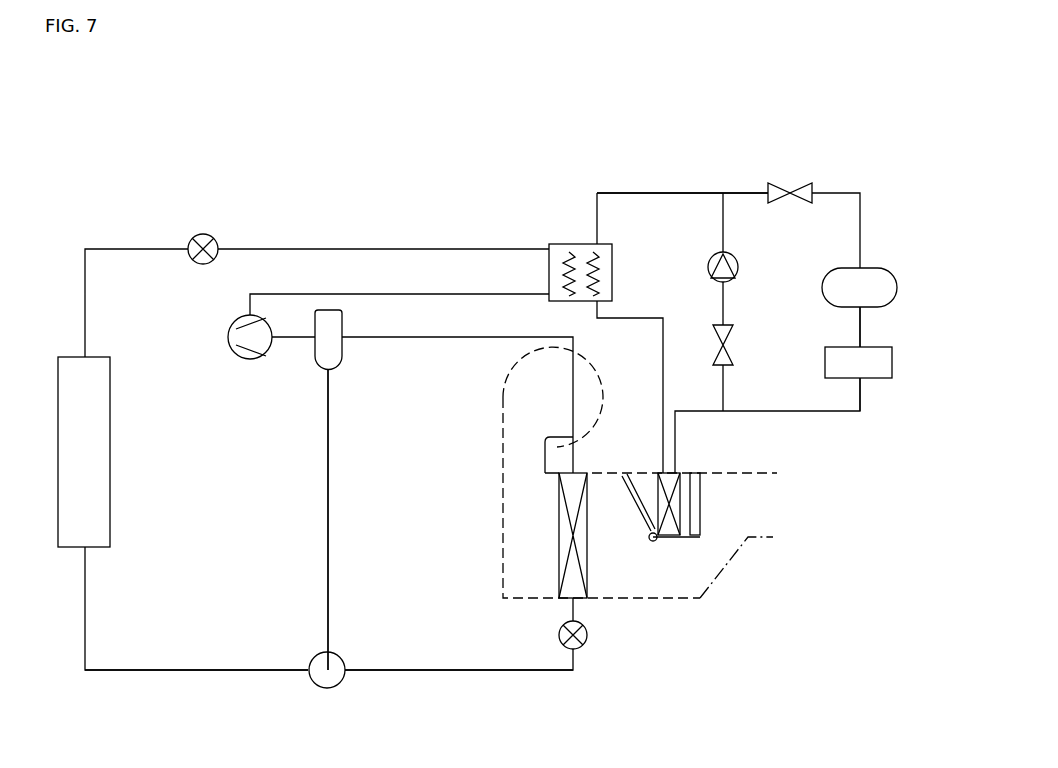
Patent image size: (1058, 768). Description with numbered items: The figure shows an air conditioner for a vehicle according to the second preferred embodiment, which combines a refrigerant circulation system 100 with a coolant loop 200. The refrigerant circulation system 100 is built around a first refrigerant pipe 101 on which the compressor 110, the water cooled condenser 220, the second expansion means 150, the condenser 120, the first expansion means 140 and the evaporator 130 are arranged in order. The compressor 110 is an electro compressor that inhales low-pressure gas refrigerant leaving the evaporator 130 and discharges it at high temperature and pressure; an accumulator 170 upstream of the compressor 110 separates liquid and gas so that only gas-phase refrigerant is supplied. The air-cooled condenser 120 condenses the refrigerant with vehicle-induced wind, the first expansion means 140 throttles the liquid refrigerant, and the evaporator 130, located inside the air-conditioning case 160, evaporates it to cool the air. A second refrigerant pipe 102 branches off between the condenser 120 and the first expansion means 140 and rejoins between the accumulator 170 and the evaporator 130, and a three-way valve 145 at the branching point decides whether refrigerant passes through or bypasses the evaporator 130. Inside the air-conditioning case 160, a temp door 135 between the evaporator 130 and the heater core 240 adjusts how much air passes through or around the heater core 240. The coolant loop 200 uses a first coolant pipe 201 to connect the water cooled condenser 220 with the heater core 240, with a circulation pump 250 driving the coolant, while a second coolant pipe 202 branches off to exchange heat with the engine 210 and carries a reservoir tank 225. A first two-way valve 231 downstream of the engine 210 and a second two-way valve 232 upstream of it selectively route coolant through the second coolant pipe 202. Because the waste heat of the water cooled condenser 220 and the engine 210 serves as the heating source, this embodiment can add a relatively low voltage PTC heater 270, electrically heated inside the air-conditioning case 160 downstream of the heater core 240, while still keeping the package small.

The refrigerant circulation system 100 is at (310, 222).
The first refrigerant pipe 101 is at (230, 670).
The second refrigerant pipe 102 is at (326, 524).
The compressor 110 is at (250, 359).
The condenser 120 is at (110, 455).
The evaporator 130 is at (580, 600).
The temp door 135 is at (645, 472).
The first expansion means 140 is at (587, 642).
The three-way valve 145 is at (327, 688).
The second expansion means 150 is at (210, 234).
The air-conditioning case 160 is at (685, 600).
The accumulator 170 is at (342, 364).
The coolant loop 200 is at (733, 186).
The first coolant pipe 201 is at (623, 193).
The second coolant pipe 202 is at (860, 323).
The engine 210 is at (897, 290).
The water cooled condenser 220 is at (561, 243).
The reservoir tank 225 is at (892, 360).
The first two-way valve 231 is at (797, 183).
The second two-way valve 232 is at (733, 350).
The heater core 240 is at (678, 482).
The circulation pump 250 is at (738, 265).
The low voltage PTC heater 270 is at (706, 495).